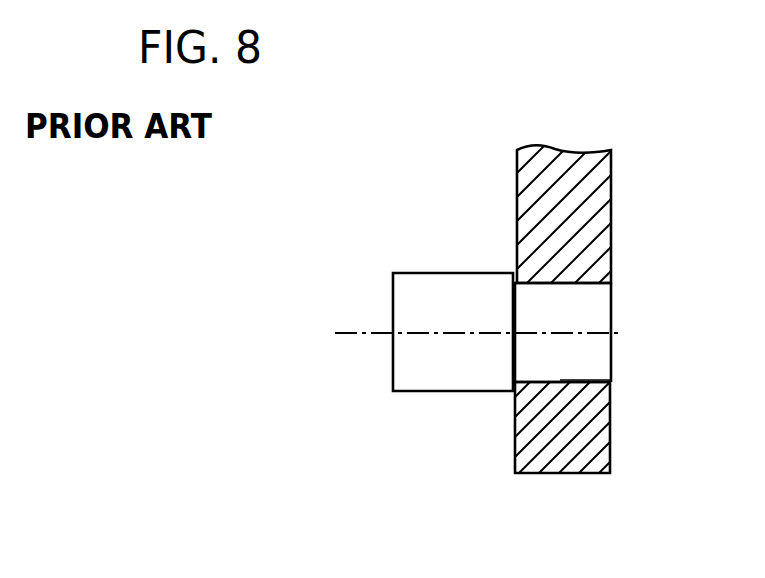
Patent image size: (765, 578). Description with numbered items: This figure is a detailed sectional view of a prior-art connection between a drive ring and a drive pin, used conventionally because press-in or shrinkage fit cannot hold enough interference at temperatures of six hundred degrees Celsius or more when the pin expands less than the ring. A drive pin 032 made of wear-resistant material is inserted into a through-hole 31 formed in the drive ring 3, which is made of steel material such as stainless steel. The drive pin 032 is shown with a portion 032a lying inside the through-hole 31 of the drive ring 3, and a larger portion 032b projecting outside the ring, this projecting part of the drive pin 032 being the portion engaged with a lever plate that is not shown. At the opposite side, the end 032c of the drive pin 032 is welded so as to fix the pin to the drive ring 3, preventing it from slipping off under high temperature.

The drive ring 3 is at (572, 150).
The through-hole 31 is at (557, 383).
The drive pin 032 is at (563, 320).
The drive pin portion 032a is at (595, 310).
The drive pin portion 032b is at (458, 375).
The end of drive pin 032c is at (598, 379).